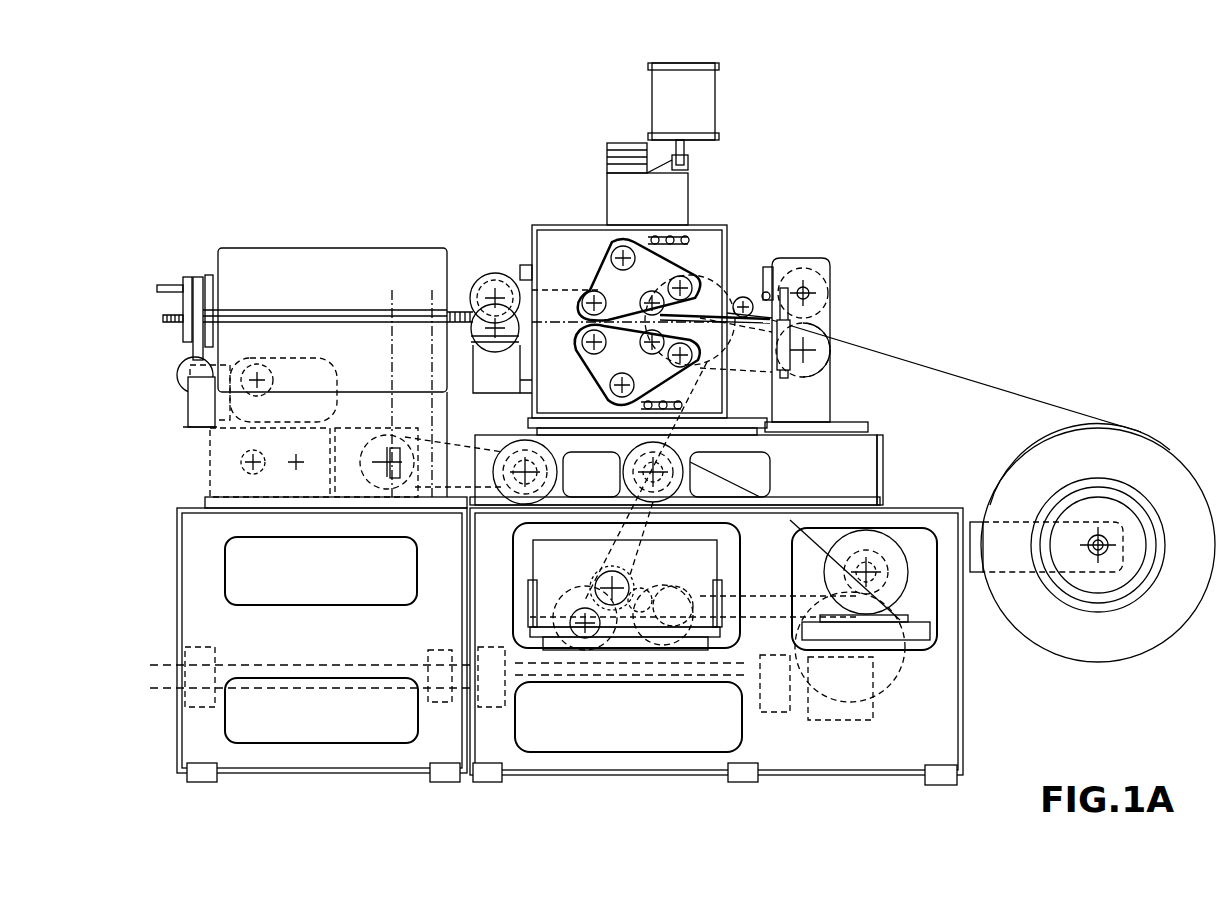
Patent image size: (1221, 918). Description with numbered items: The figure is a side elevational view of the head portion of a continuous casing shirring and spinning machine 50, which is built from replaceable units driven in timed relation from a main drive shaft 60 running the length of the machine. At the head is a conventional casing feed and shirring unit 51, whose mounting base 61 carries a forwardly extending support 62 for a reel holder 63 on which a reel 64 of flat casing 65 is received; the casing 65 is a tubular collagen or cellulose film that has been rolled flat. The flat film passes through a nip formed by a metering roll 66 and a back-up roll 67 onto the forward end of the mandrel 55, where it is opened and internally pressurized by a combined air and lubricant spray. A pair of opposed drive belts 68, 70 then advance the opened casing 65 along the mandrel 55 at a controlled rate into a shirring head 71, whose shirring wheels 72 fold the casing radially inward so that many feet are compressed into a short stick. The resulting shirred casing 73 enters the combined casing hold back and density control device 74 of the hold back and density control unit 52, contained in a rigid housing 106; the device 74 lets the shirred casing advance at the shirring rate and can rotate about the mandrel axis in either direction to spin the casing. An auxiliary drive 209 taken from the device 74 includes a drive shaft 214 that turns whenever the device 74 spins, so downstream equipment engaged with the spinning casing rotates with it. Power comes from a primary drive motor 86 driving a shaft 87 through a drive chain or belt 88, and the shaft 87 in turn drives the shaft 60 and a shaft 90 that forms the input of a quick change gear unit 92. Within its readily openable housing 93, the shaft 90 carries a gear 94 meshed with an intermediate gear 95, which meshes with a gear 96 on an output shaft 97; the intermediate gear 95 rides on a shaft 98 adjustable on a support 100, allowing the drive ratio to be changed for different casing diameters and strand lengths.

The continuous casing shirring and spinning machine 50 is at (955, 255).
The casing feed and shirring unit 51 is at (797, 787).
The combined shirred casing hold back and density control unit 52 is at (303, 780).
The mandrel 55 is at (733, 300).
The main drive shaft 60 is at (295, 690).
The mounting base 61 is at (925, 500).
The support 62 is at (982, 585).
The reel holder 63 is at (1085, 588).
The reel 64 is at (1103, 632).
The casing 65 is at (1143, 650).
The metering roll 66 is at (833, 352).
The back-up roll 67 is at (835, 290).
The drive belt 68 is at (605, 250).
The drive belt 70 is at (600, 378).
The shirring head 71 is at (505, 258).
The shirring wheels 72 is at (487, 275).
The shirred casing 73 is at (177, 328).
The combined casing hold back and density control device 74 is at (340, 247).
The primary drive motor 86 is at (900, 570).
The shaft 87 is at (680, 470).
The drive chain or belt 88 is at (775, 502).
The shaft 90 is at (582, 592).
The quick change gear unit 92 is at (530, 548).
The housing 93 is at (720, 562).
The gear 94 is at (560, 605).
The intermediate gear 95 is at (640, 586).
The gear 96 is at (668, 585).
The output shaft 97 is at (720, 615).
The shaft 98 is at (610, 578).
The support 100 is at (582, 578).
The rigid housing 106 is at (202, 505).
The auxiliary drive 209 is at (200, 262).
The drive shaft 214 is at (163, 282).